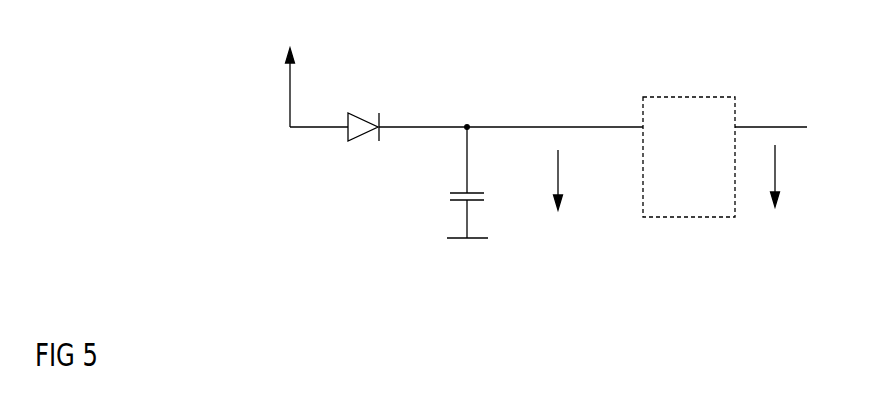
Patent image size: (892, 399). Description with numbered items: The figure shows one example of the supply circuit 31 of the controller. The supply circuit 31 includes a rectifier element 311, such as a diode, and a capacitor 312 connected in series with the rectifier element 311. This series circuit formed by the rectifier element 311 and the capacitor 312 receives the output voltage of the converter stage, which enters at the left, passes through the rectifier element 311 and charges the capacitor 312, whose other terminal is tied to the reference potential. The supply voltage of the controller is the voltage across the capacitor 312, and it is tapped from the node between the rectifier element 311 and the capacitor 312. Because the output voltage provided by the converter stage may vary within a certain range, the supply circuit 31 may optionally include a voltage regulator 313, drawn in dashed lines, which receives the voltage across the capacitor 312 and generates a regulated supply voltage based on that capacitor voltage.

The supply circuit 31 is at (500, 70).
The rectifier element 311 is at (363, 114).
The capacitor 312 is at (486, 182).
The voltage regulator 313 is at (675, 198).